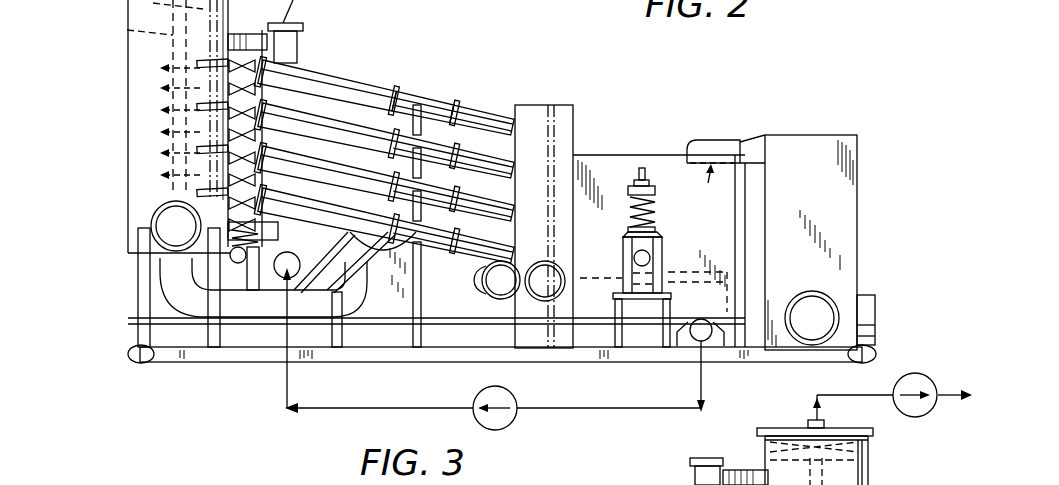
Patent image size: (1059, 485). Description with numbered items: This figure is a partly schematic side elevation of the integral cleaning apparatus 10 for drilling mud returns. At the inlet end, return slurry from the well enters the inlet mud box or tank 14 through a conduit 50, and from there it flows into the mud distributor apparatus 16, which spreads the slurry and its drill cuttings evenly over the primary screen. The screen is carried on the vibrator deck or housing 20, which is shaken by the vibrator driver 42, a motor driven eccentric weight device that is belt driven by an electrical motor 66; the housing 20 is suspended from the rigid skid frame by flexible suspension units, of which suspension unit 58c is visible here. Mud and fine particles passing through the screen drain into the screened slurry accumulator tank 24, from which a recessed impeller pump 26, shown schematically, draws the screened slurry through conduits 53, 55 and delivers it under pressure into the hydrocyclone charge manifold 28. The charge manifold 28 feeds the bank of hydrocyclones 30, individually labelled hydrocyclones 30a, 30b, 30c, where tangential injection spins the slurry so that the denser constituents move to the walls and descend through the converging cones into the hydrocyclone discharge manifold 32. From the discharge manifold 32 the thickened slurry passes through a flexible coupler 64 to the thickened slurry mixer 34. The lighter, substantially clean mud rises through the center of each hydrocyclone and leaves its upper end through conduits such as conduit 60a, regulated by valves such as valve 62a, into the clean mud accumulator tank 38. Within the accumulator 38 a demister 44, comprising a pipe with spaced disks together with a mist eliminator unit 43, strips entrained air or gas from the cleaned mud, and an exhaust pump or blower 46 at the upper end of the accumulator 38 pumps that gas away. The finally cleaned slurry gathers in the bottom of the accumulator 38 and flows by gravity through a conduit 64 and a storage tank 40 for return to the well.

The integral cleaning apparatus 10 is at (783, 80).
The inlet mud box or tank 14 is at (843, 209).
The mud distributor apparatus 16 is at (702, 184).
The vibrator deck or housing 20 is at (618, 155).
The screened slurry accumulator tank 24 is at (745, 283).
The pump 26 is at (512, 423).
The hydrocyclone charge manifold 28 is at (690, 474).
The hydrocyclones 30 is at (464, 244).
The hydrocyclone 30a is at (316, 72).
The hydrocyclone 30b is at (340, 108).
The hydrocyclone 30c is at (367, 132).
The hydrocyclone discharge manifold 32 is at (540, 108).
The thickened slurry mixer 34 is at (486, 280).
The clean mud accumulator tank 38 is at (128, 128).
The storage tank 40 is at (595, 346).
The vibrator driver 42 is at (385, 253).
The mist eliminator unit 43 is at (127, 6).
The demister 44 is at (127, 30).
The exhaust pump or blower 46 is at (913, 373).
The conduit 50 is at (872, 295).
The conduit 53 is at (577, 408).
The conduit 55 is at (375, 408).
The flexible suspension unit 58c is at (650, 214).
The conduit 60a is at (200, 58).
The valve 62a is at (238, 55).
The conduit / flexible coupler 64 is at (165, 270).
The electrical motor 66 is at (327, 280).